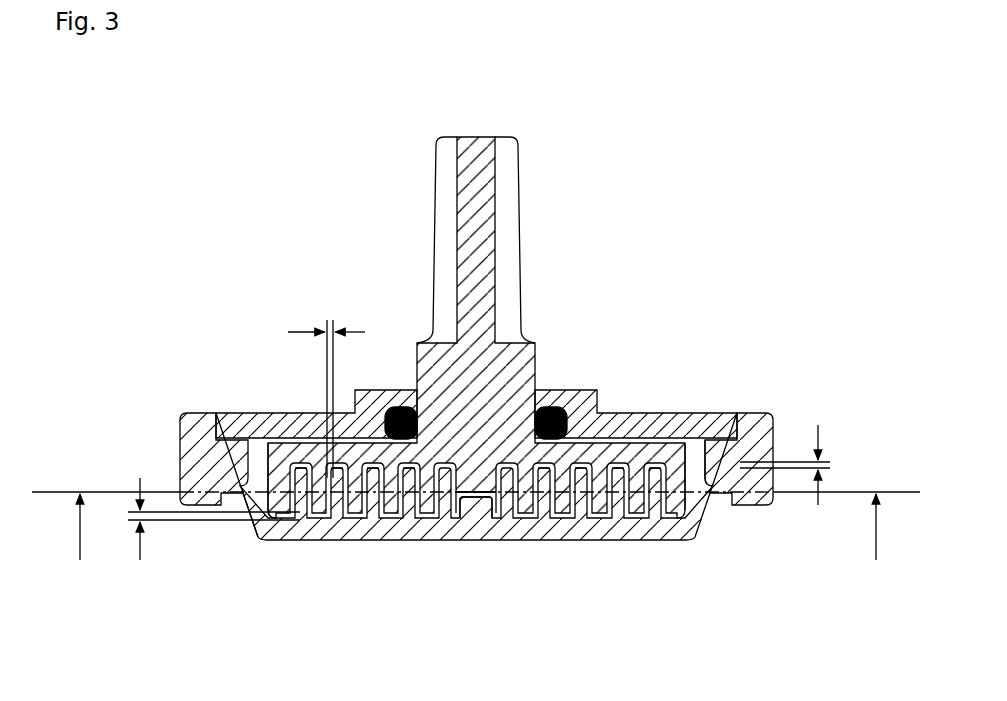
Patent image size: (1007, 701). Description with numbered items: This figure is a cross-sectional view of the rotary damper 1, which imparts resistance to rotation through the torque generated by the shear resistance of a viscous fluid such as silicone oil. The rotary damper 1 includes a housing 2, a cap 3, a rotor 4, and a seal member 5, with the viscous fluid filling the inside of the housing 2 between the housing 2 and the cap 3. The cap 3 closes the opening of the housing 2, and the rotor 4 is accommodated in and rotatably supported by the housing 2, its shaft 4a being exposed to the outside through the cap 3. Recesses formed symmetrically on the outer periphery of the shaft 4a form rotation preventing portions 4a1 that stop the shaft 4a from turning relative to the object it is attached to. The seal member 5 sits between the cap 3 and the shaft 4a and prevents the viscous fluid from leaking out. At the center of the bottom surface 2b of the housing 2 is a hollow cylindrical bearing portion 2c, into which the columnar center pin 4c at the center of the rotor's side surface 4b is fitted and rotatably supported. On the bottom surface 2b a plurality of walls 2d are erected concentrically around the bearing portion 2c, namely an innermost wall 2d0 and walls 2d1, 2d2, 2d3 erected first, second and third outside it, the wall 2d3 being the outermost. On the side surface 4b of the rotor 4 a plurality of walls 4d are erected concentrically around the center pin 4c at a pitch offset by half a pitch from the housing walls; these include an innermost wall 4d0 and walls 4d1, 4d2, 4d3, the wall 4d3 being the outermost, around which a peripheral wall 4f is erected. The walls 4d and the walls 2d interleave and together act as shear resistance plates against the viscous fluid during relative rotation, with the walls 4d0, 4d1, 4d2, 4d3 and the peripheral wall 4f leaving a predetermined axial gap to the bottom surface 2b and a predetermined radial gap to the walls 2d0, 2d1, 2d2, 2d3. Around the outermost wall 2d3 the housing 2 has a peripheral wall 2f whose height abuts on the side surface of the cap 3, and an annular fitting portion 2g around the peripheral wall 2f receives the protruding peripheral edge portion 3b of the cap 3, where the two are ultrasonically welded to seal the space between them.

The rotary damper 1 is at (773, 161).
The housing 2 is at (762, 409).
The bottom surface 2b is at (306, 542).
The bearing portion 2c is at (503, 520).
The walls 2d is at (665, 603).
The innermost wall 2d0 is at (546, 520).
The wall 2d1 is at (583, 518).
The wall 2d2 is at (620, 520).
The wall 2d3 is at (657, 518).
The peripheral wall 2f is at (695, 414).
The fitting portion 2g is at (714, 494).
The cap 3 is at (636, 413).
The peripheral edge portion 3b is at (222, 462).
The rotor 4 is at (461, 131).
The shaft 4a is at (520, 326).
The rotation preventing portion 4a1 is at (445, 208).
The side surface 4b is at (304, 458).
The center pin 4c is at (474, 516).
The walls 4d is at (437, 603).
The innermost wall 4d0 is at (407, 518).
The wall 4d1 is at (372, 520).
The wall 4d2 is at (336, 518).
The wall 4d3 is at (303, 520).
The peripheral wall 4f is at (292, 522).
The seal member 5 is at (551, 406).